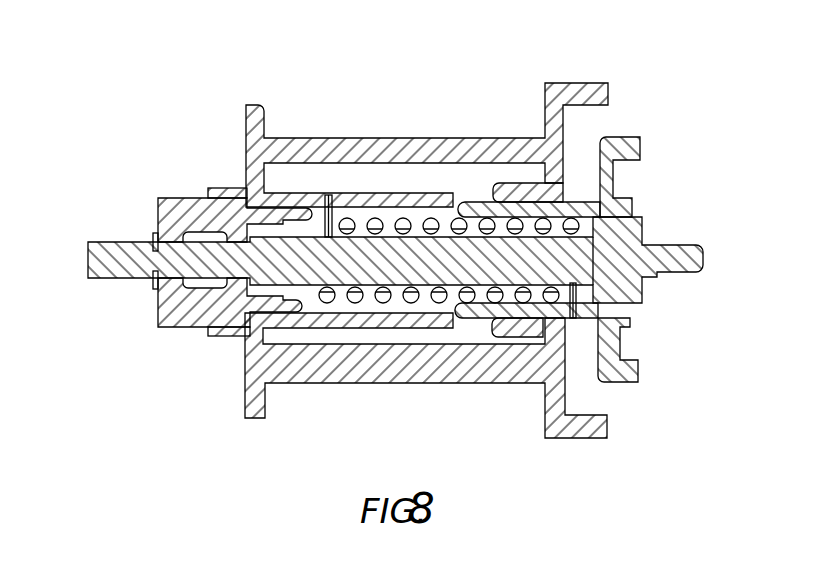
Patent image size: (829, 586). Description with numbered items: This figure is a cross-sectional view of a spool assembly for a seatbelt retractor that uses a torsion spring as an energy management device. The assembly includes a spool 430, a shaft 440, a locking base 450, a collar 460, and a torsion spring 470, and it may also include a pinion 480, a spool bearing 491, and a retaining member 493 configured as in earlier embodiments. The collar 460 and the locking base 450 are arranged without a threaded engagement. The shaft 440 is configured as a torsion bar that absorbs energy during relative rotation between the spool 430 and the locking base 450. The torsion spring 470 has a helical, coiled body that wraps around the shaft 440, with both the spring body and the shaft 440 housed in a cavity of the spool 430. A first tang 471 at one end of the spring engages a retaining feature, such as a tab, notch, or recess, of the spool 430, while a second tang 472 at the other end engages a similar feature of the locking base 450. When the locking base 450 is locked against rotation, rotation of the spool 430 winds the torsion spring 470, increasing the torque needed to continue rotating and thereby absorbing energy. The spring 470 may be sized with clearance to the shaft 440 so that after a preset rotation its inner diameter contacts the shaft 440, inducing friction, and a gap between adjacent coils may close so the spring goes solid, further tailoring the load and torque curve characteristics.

The spool 430 is at (330, 160).
The shaft 440 is at (107, 243).
The locking base 450 is at (630, 382).
The collar 460 is at (518, 190).
The torsion spring 470 is at (327, 303).
The first tang 471 is at (328, 195).
The second tang 472 is at (576, 293).
The pinion 480 is at (163, 328).
The spool bearing 491 is at (240, 186).
The retaining member 493 is at (155, 283).